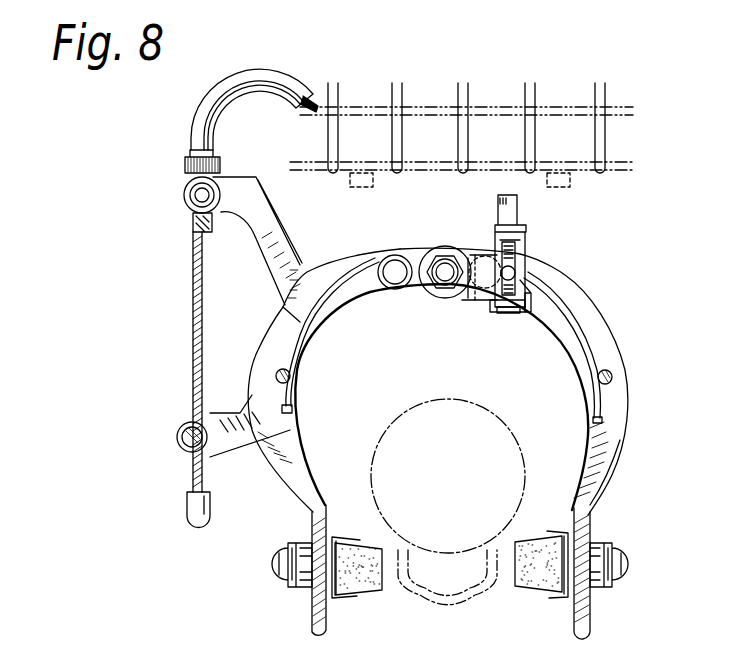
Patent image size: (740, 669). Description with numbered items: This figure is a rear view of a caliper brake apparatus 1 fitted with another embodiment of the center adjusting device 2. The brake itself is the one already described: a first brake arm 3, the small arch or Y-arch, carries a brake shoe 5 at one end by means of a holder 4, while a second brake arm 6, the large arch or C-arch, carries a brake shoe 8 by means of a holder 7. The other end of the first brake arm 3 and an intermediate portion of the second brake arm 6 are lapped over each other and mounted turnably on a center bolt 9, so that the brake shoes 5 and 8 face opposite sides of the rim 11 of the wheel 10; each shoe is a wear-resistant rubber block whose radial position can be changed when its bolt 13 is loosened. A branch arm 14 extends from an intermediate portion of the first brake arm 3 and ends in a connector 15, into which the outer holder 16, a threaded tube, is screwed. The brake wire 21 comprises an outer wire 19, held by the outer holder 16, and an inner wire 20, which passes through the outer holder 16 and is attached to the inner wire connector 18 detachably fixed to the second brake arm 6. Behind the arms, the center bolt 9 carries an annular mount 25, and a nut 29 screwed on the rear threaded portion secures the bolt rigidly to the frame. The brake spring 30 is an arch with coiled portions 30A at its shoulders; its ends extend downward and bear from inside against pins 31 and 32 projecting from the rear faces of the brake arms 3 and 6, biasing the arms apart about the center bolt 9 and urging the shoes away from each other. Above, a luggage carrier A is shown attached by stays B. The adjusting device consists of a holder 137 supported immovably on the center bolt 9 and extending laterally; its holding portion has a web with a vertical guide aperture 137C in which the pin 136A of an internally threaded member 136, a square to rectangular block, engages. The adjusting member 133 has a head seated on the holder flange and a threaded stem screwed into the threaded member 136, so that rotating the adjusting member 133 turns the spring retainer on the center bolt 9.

The caliper brake apparatus 1 is at (439, 430).
The center adjusting device 2 is at (526, 273).
The first brake arm 3 is at (276, 456).
The holder 4 is at (344, 597).
The brake shoe 5 is at (368, 590).
The second brake arm 6 is at (610, 474).
The holder 7 is at (555, 598).
The brake shoe 8 is at (526, 588).
The center bolt 9 is at (442, 280).
The wheel 10 is at (486, 422).
The rim 11 is at (462, 602).
The bolt 13 is at (272, 568).
The branch arm 14 is at (250, 236).
The connector 15 is at (200, 198).
The outer holder 16 is at (184, 166).
The inner wire connector 18 is at (184, 432).
The outer wire 19 is at (184, 131).
The inner wire 20 is at (194, 379).
The brake wire 21 is at (223, 109).
The annular mount 25 is at (420, 286).
The nut 29 is at (436, 260).
The brake spring 30 is at (598, 352).
The coiled portions 30A is at (386, 262).
The pin 31 is at (277, 376).
The pin 32 is at (613, 381).
The adjusting member 133 is at (500, 210).
The internally threaded member 136 is at (527, 308).
The pin 136A is at (514, 276).
The holder 137 is at (524, 258).
The guide aperture 137C is at (496, 312).
The luggage carrier A is at (610, 100).
The stays B is at (348, 186).